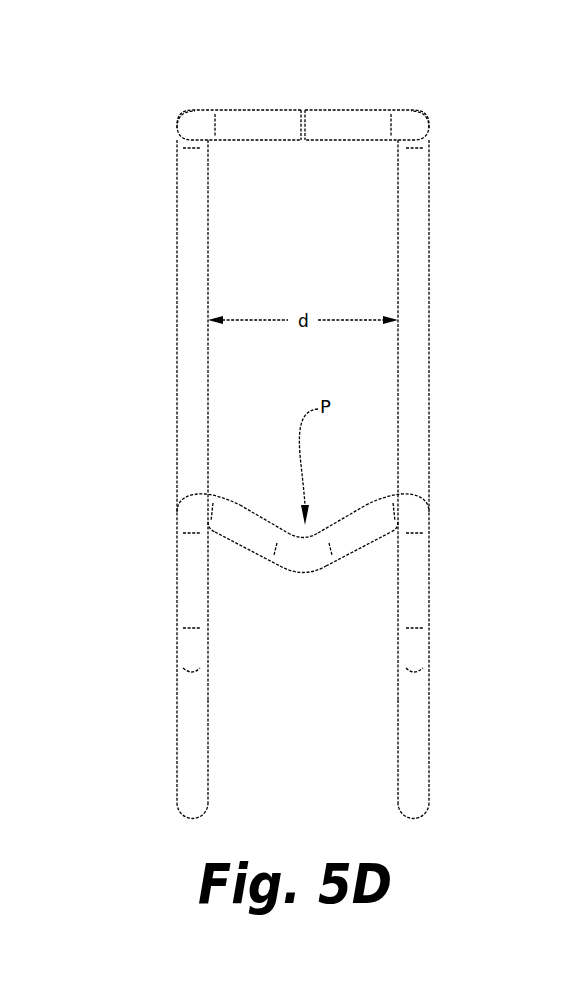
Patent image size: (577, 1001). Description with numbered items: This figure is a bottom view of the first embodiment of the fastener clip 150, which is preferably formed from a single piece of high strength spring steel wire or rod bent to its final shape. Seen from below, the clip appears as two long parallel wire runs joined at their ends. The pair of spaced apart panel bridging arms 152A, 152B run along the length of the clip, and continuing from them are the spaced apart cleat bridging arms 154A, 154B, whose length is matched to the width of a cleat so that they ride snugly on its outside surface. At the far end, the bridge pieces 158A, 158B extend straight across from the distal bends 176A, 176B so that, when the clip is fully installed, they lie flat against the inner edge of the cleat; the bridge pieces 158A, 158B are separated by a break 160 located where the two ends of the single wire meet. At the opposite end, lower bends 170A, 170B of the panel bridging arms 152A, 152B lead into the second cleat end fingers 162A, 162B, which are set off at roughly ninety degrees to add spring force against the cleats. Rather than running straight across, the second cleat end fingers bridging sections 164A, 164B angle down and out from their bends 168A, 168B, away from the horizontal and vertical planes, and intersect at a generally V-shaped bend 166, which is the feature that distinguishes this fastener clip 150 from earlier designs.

The fastener clip 150 is at (494, 337).
The panel bridging arm 152A is at (193, 748).
The panel bridging arm 152B is at (413, 748).
The cleat bridging arm 154A is at (196, 236).
The cleat bridging arm 154B is at (410, 236).
The bridge piece 158A is at (255, 127).
The bridge piece 158B is at (351, 127).
The break 160 is at (303, 158).
The second cleat end finger 162A is at (193, 583).
The second cleat end finger 162B is at (413, 583).
The second cleat end fingers bridging section 164A is at (245, 525).
The second cleat end fingers bridging section 164B is at (361, 525).
The V-shaped bend 166 is at (305, 557).
The bend 168A is at (197, 515).
The bend 168B is at (409, 515).
The lower bend 170A is at (193, 651).
The lower bend 170B is at (413, 651).
The distal bend 176A is at (190, 122).
The distal bend 176B is at (416, 122).